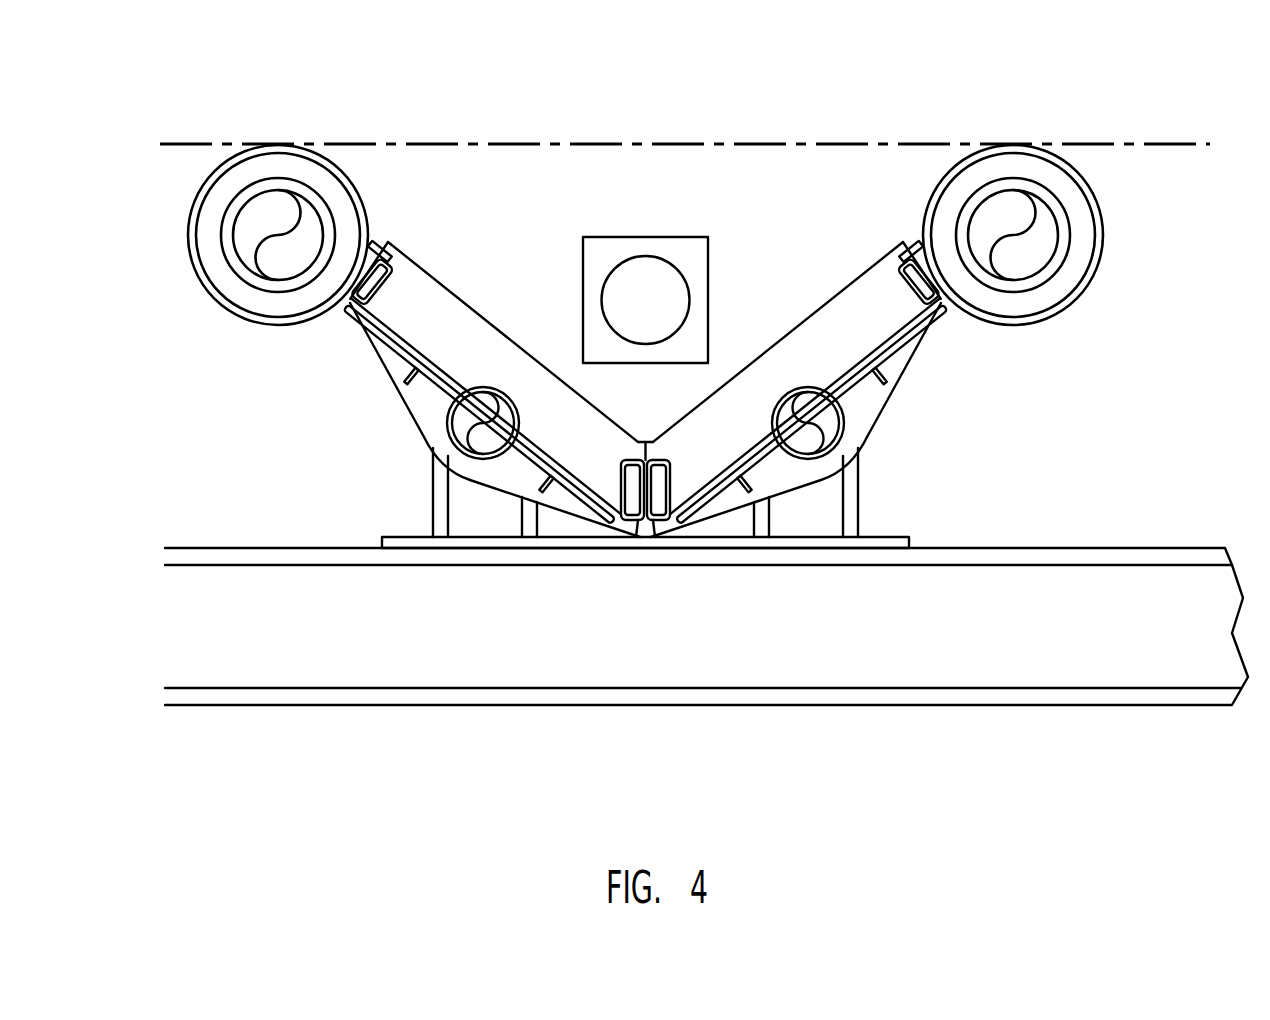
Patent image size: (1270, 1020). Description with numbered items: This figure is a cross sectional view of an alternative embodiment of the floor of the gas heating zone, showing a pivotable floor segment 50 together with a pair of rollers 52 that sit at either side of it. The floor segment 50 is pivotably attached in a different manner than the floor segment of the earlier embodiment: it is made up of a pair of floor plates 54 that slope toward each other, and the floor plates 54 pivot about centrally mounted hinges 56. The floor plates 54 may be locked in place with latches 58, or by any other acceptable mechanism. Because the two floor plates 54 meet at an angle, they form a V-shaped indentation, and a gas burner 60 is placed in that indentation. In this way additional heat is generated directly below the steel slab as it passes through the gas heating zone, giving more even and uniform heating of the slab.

The pivotable floor segment 50 is at (882, 134).
The rollers 52 is at (248, 145).
The floor plates 54 is at (465, 333).
The hinges 56 is at (465, 447).
The latches 58 is at (380, 247).
The gas burner 60 is at (660, 247).